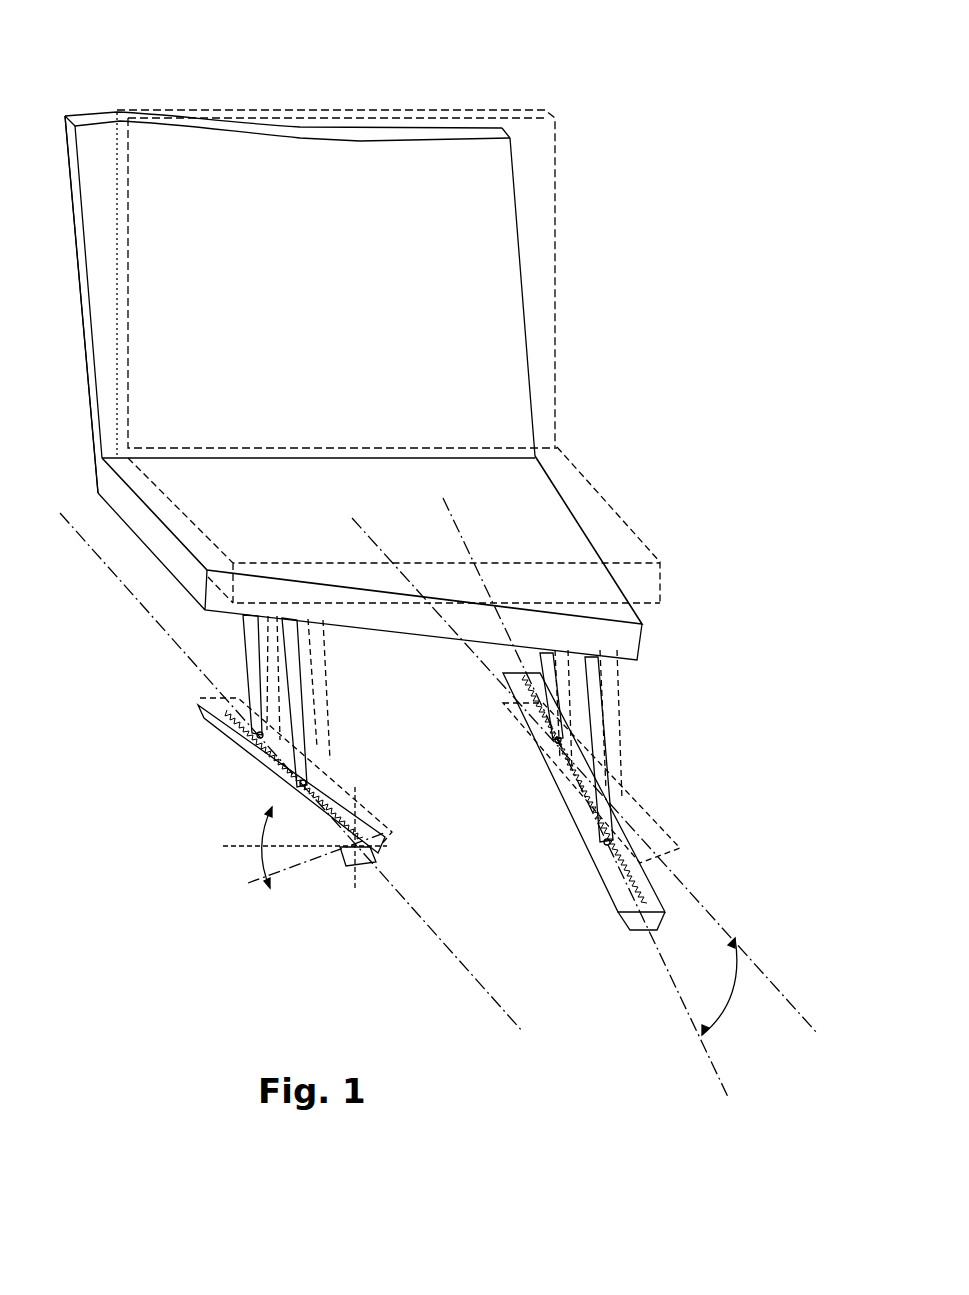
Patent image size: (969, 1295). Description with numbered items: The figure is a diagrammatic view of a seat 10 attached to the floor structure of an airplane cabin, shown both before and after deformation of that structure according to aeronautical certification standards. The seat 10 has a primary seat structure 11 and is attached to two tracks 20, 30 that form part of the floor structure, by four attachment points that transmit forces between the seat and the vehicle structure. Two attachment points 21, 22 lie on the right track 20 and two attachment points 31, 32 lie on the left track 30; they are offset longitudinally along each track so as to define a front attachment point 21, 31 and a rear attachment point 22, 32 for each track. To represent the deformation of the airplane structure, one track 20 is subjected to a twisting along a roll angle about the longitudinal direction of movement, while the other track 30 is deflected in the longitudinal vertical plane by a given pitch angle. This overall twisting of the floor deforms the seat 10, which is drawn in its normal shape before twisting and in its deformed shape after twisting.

The seat 10 is at (556, 108).
The primary seat structure 11 is at (245, 665).
The right track 20 is at (337, 868).
The front attachment point 21 is at (304, 784).
The rear attachment point 22 is at (261, 737).
The left track 30 is at (597, 893).
The front attachment point 31 is at (605, 845).
The rear attachment point 32 is at (557, 741).